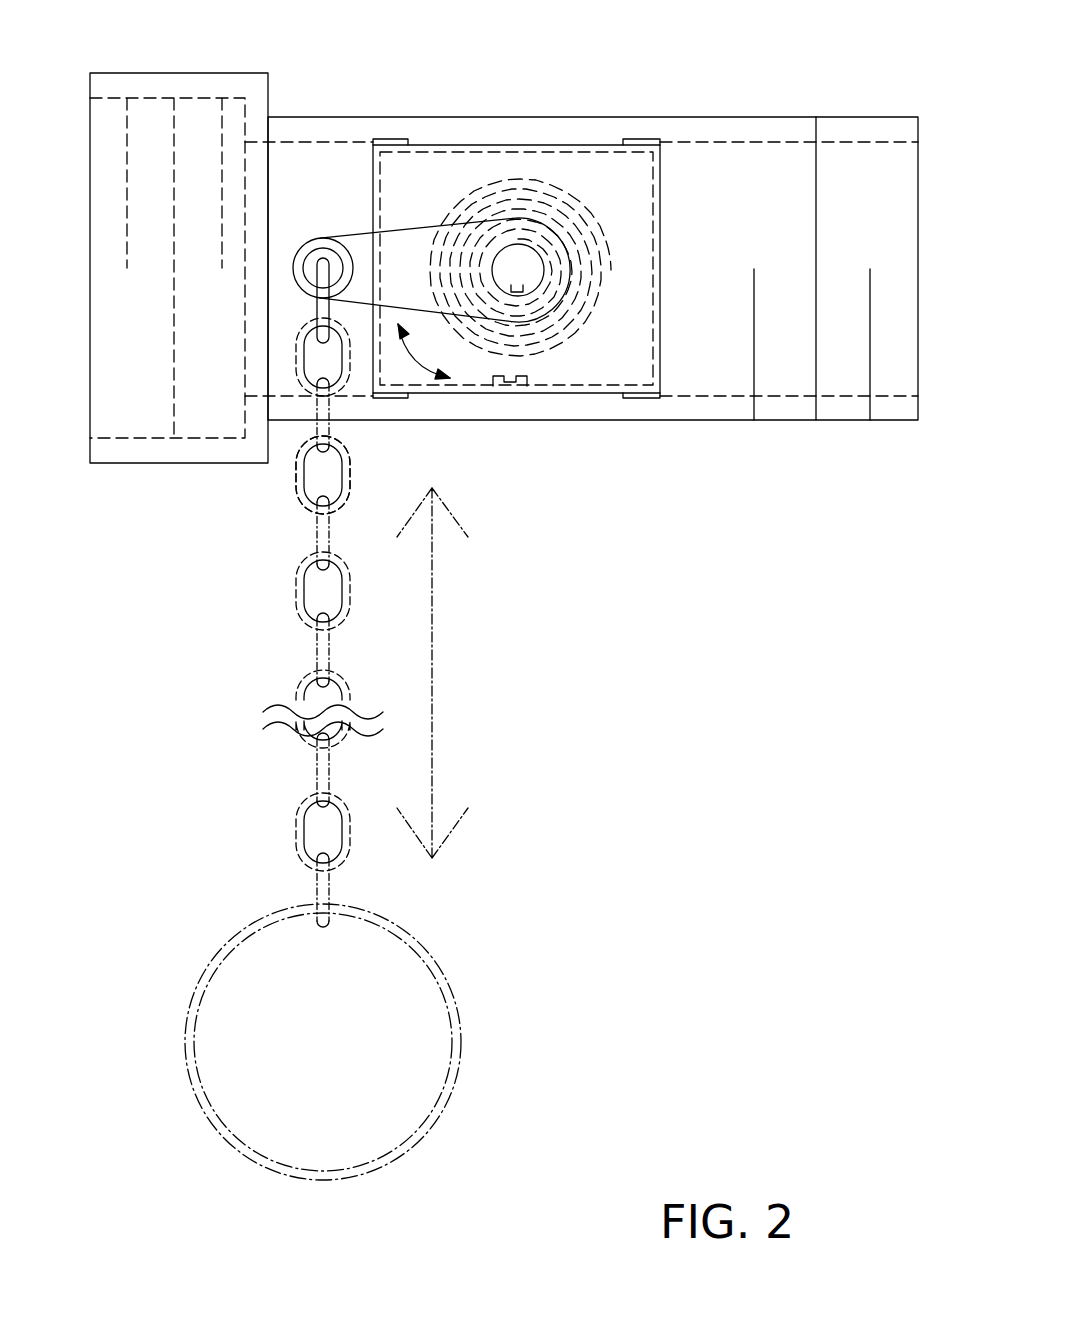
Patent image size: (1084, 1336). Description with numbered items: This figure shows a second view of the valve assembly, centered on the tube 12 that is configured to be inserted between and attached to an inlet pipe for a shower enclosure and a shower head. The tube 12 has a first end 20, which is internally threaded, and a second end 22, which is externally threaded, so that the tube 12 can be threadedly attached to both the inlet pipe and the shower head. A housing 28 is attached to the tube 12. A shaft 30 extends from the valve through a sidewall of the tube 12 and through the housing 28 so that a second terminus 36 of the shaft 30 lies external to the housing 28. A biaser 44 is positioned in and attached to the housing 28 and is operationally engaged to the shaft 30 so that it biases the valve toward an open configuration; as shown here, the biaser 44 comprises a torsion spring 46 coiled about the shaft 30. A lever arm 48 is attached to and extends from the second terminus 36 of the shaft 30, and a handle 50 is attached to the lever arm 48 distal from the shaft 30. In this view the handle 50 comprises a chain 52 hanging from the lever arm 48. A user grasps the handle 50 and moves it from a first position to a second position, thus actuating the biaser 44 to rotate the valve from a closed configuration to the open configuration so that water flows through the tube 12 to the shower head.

The tube 12 is at (722, 117).
The first end 20 is at (88, 266).
The second end 22 is at (925, 260).
The housing 28 is at (618, 195).
The shaft 30 is at (520, 270).
The second terminus 36 is at (530, 295).
The biaser 44 is at (517, 178).
The torsion spring 46 is at (572, 190).
The lever arm 48 is at (407, 253).
The handle 50 is at (352, 588).
The chain 52 is at (340, 625).